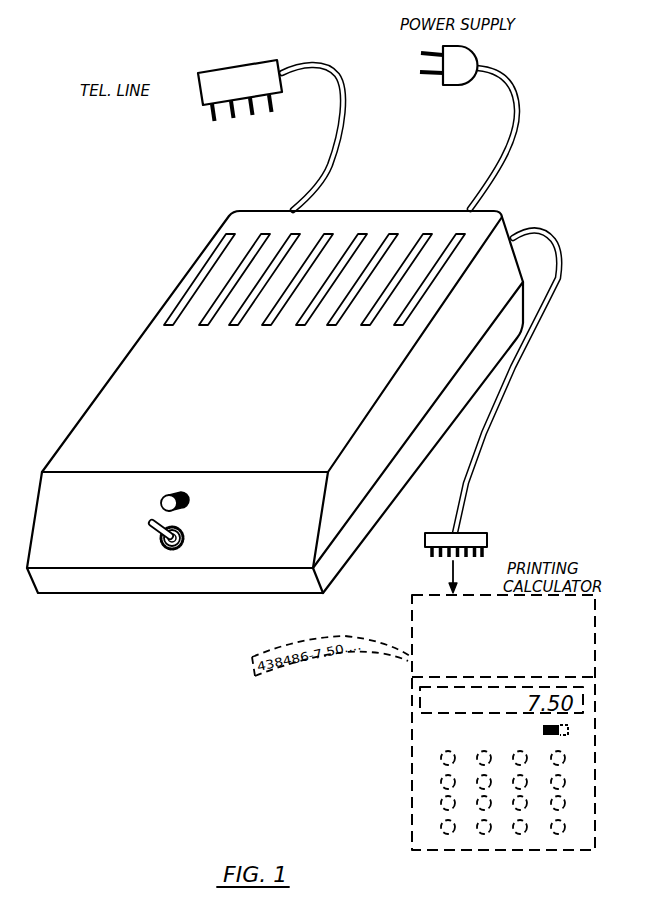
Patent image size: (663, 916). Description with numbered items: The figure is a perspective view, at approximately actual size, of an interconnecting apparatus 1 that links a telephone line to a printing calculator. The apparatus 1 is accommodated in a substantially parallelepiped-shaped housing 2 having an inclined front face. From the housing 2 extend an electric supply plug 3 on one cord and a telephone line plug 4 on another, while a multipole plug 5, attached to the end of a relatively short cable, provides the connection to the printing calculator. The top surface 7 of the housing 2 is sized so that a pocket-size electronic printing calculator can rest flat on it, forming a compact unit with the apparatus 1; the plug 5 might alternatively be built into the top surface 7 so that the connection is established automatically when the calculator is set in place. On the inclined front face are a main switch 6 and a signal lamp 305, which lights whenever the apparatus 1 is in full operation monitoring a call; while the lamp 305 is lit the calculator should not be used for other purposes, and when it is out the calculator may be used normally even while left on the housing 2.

The interconnecting apparatus 1 is at (359, 208).
The housing 2 is at (503, 239).
The electric supply plug 3 is at (455, 77).
The telephone line plug 4 is at (237, 78).
The multipole plug 5 is at (468, 540).
The main switch 6 is at (173, 550).
The top surface 7 is at (118, 384).
The signal lamp 305 is at (172, 494).